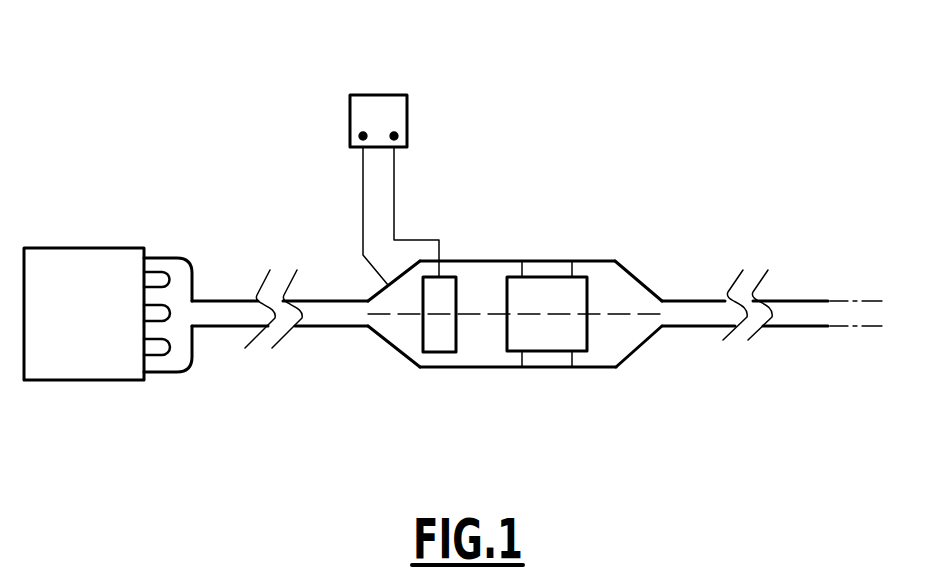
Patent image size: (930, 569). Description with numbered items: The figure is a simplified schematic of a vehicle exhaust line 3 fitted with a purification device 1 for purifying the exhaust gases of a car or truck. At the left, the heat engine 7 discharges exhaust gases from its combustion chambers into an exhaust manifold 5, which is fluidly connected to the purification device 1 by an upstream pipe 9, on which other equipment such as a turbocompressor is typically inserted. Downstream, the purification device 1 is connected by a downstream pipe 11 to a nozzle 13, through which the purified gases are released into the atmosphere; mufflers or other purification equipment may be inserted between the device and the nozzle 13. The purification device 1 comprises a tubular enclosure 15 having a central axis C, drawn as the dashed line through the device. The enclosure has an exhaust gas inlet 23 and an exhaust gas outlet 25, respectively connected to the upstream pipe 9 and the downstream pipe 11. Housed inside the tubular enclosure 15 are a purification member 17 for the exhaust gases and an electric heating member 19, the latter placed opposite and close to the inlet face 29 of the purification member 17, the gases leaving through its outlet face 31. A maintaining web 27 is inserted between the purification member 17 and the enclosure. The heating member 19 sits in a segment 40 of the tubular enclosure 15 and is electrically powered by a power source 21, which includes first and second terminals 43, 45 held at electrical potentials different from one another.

The purification device 1 is at (529, 157).
The exhaust line 3 is at (722, 223).
The exhaust manifold 5 is at (178, 270).
The heat engine 7 is at (74, 272).
The upstream pipe 9 is at (222, 330).
The downstream pipe 11 is at (697, 330).
The nozzle 13 is at (798, 298).
The tubular enclosure 15 is at (483, 258).
The purification member 17 is at (552, 330).
The electric heating member 19 is at (438, 330).
The power source 21 is at (381, 90).
The exhaust gas inlet 23 is at (368, 330).
The exhaust gas outlet 25 is at (660, 290).
The maintaining web 27 is at (548, 272).
The inlet face 29 is at (497, 330).
The outlet face 31 is at (590, 315).
The segment of the tubular enclosure 40 is at (443, 258).
The first terminal 43 is at (394, 136).
The second terminal 45 is at (363, 136).
The central axis C is at (620, 312).